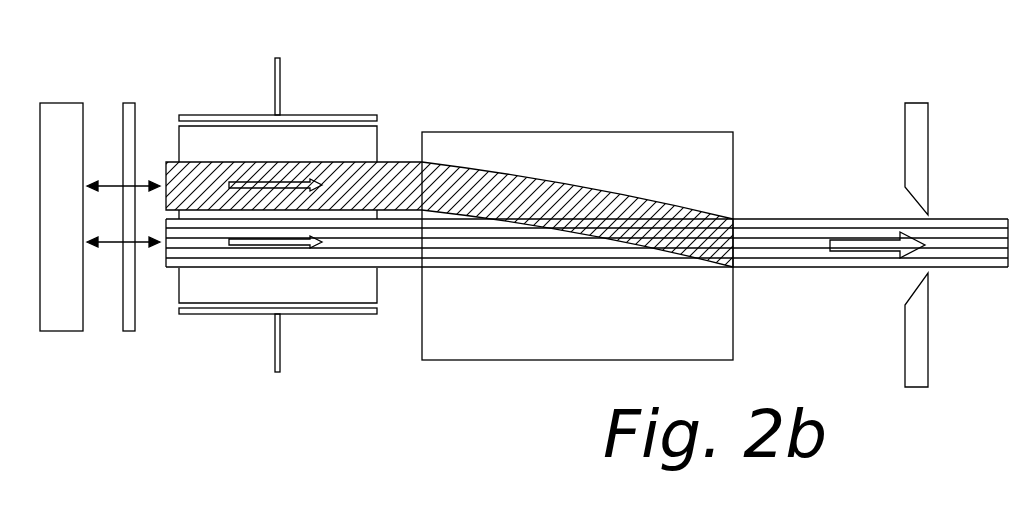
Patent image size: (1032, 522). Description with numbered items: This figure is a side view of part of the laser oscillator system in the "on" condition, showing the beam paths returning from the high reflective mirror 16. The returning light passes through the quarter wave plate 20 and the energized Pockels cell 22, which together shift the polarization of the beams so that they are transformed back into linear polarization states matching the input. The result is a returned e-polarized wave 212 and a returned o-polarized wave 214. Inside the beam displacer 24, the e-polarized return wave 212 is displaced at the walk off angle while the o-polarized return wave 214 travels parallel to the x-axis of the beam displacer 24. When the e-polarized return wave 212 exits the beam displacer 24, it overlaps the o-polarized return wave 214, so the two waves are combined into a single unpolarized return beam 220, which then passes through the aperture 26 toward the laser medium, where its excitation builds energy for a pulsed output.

The high reflective mirror 16 is at (53, 102).
The quarter wave plate 20 is at (130, 102).
The Pockels cell 22 is at (378, 127).
The beam displacer 24 is at (657, 132).
The aperture 26 is at (928, 123).
The returned e-polarized wave 212 is at (490, 173).
The returned o-polarized wave 214 is at (462, 268).
The single unpolarized return beam 220 is at (800, 221).